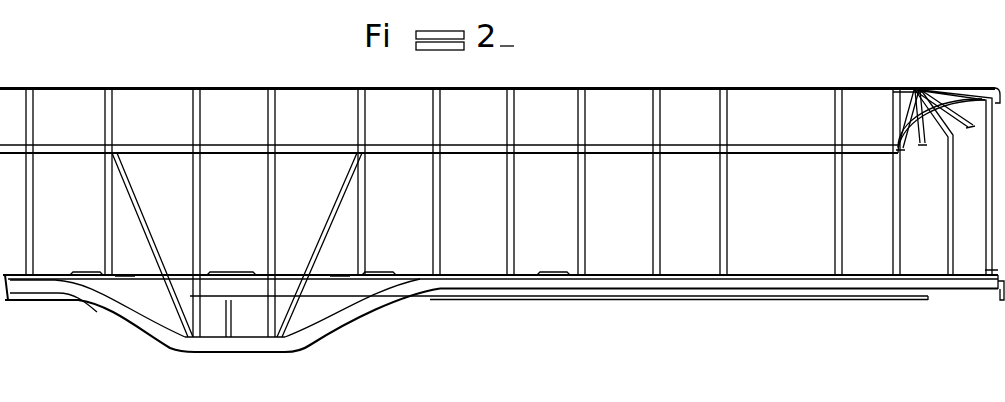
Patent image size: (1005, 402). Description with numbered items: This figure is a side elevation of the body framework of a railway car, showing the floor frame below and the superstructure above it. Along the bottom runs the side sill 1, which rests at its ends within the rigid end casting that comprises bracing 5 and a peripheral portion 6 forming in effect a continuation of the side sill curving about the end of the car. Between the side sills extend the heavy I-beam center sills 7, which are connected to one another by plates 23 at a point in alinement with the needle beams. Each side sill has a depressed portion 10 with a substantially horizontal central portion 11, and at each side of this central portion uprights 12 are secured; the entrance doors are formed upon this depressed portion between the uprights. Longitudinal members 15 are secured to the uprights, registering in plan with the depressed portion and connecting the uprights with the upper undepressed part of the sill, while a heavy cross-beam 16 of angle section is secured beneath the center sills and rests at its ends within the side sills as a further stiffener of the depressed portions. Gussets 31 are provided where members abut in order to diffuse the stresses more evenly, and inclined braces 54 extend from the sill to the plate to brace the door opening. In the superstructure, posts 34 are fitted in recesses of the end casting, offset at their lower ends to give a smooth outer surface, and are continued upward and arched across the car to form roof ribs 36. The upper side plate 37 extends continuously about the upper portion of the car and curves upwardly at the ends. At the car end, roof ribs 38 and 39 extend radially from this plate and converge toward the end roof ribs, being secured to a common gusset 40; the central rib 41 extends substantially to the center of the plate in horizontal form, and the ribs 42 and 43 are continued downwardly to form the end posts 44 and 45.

The side sill 1 is at (628, 281).
The bracing 5 is at (994, 287).
The peripheral portion 6 is at (997, 294).
The center sill 7 is at (36, 297).
The depressed portion 10 is at (118, 310).
The horizontal central portion 11 is at (231, 345).
The upright 12 is at (196, 197).
The longitudinal member 15 is at (125, 277).
The cross-beam 16 is at (229, 318).
The plate 23 is at (553, 273).
The gusset 31 is at (88, 273).
The post 34 is at (436, 215).
The roof rib 36 is at (508, 129).
The upper side plate 37 is at (235, 150).
The roof rib 38 is at (917, 152).
The roof rib 39 is at (967, 138).
The gusset 40 is at (909, 89).
The central rib 41 is at (977, 89).
The rib 42 is at (946, 133).
The rib 43 is at (987, 96).
The end post 44 is at (950, 233).
The end post 45 is at (986, 207).
The inclined brace 54 is at (155, 248).